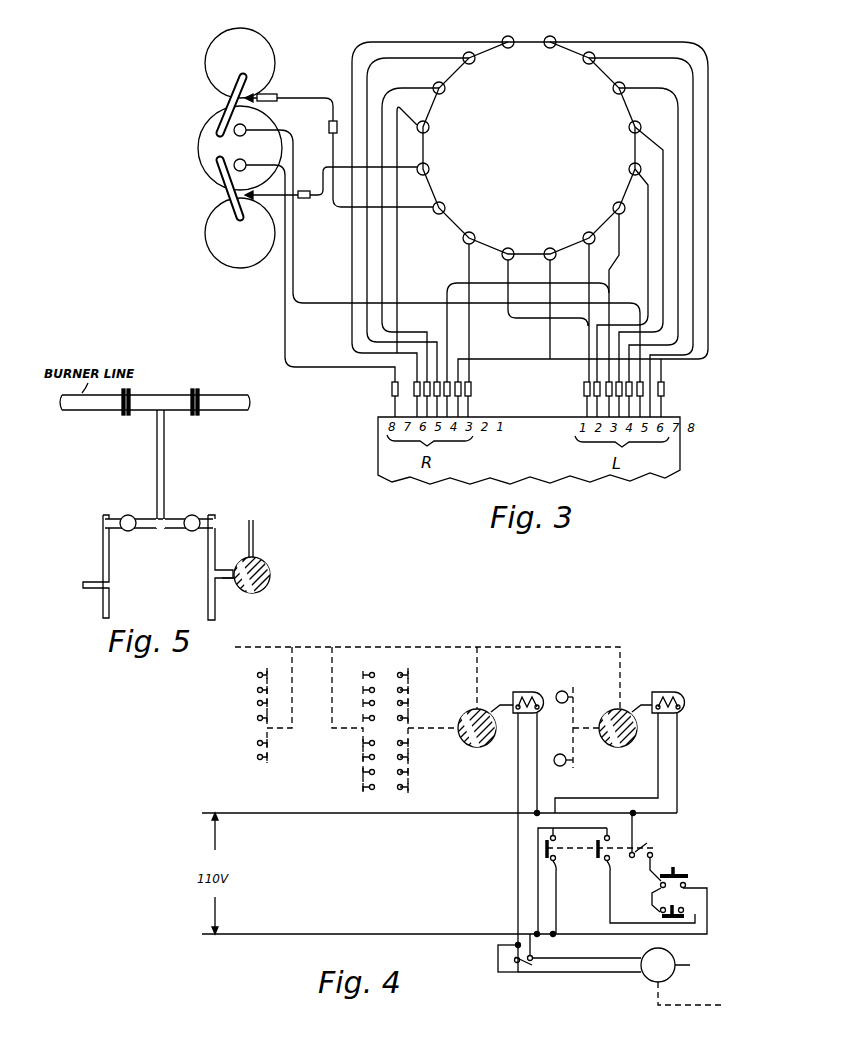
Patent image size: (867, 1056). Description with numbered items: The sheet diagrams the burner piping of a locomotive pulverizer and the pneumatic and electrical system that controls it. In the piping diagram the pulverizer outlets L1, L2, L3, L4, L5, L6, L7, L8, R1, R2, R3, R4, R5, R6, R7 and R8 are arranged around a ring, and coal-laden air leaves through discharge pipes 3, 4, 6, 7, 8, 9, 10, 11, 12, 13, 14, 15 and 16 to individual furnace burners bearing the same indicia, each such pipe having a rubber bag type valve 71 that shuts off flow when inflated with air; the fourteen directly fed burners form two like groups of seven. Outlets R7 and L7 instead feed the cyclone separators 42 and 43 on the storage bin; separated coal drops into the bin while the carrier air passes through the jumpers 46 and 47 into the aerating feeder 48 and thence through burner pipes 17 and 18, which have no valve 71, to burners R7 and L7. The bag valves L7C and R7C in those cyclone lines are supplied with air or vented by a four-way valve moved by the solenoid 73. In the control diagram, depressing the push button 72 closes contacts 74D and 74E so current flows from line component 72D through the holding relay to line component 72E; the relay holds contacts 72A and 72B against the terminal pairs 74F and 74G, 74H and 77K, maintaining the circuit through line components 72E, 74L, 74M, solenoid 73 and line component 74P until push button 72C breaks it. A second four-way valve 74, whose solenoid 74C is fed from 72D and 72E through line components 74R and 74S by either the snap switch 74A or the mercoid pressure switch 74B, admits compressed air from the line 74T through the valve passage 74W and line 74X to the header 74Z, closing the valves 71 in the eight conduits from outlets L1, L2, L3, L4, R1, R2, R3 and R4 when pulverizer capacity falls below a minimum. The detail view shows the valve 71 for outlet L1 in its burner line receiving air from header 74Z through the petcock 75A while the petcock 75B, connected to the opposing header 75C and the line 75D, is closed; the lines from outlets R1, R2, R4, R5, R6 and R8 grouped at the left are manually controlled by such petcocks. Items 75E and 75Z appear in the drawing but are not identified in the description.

In FIG. 3, the coal and air discharge pipe 3 is at (398, 265).
In FIG. 3, the coal and air discharge pipe 4 is at (351, 268).
In FIG. 3, the coal and air discharge pipe 6 is at (508, 362).
In FIG. 3, the coal and air discharge pipe 7 is at (413, 334).
In FIG. 3, the coal and air discharge pipe 8 is at (447, 336).
In FIG. 3, the coal and air discharge pipe 9 is at (468, 341).
In FIG. 3, the coal and air discharge pipe 10 is at (471, 372).
In FIG. 3, the coal and air discharge pipe 11 is at (657, 146).
In FIG. 3, the coal and air discharge pipe 12 is at (622, 42).
In FIG. 3, the coal and air discharge pipe 13 is at (552, 322).
In FIG. 3, the coal and air discharge pipe 14 is at (640, 333).
In FIG. 3, the coal and air discharge pipe 15 is at (609, 325).
In FIG. 3, the coal and air discharge pipe 16 is at (655, 59).
In FIG. 3, the burner pipe 17 is at (290, 138).
In FIG. 3, the burner pipe 18 is at (272, 163).
In FIG. 3, the cyclone type coal and air separator 42 is at (208, 232).
In FIG. 3, the cyclone type coal and air separator 43 is at (214, 52).
In FIG. 3, the jumper duct 46 is at (232, 99).
In FIG. 3, the jumper duct 47 is at (232, 196).
In FIG. 3, the aerating feeder 48 is at (199, 148).
In FIG. 3, the bag type valve 71 is at (583, 389).
In FIG. 5, the bag type valve 71 is at (177, 395).
In FIG. 4, the push button 72 is at (681, 855).
In FIG. 4, the holding contact 72A is at (597, 855).
In FIG. 4, the holding contact 72B is at (545, 845).
In FIG. 4, the push button 72C is at (684, 903).
In FIG. 4, the power line component 72D is at (301, 813).
In FIG. 4, the power line component 72E is at (288, 933).
In FIG. 4, the solenoid 73 is at (667, 692).
In FIG. 5, the solenoid operated four-way valve 74 is at (264, 563).
In FIG. 4, the solenoid operated four-way valve 74 is at (467, 748).
In FIG. 4, the snap switch 74A is at (517, 973).
In FIG. 4, the mercoid pressure switch 74B is at (620, 976).
In FIG. 4, the valve operating solenoid 74C is at (527, 691).
In FIG. 4, the contact 74D is at (676, 868).
In FIG. 4, the contact 74E is at (686, 884).
In FIG. 4, the terminal 74F is at (618, 831).
In FIG. 4, the terminal 74G is at (650, 890).
In FIG. 4, the terminal 74H is at (567, 895).
In FIG. 4, the line component 74L is at (553, 903).
In FIG. 4, the line component 74M is at (623, 798).
In FIG. 4, the line component 74P is at (678, 766).
In FIG. 4, the line component 74R is at (520, 778).
In FIG. 4, the line component 74S is at (537, 771).
In FIG. 5, the compressed air line 74T is at (254, 520).
In FIG. 4, the compressed air line 74T is at (503, 647).
In FIG. 4, the valve passage 74W is at (480, 711).
In FIG. 5, the air line 74X is at (222, 580).
In FIG. 4, the air line 74X is at (431, 731).
In FIG. 4, the header 74Z is at (411, 716).
In FIG. 5, the petcock 75A is at (193, 515).
In FIG. 4, the petcock 75A is at (364, 739).
In FIG. 5, the petcock 75B is at (128, 515).
In FIG. 5, the opposing header 75C is at (104, 553).
In FIG. 4, the line 75D is at (330, 719).
In FIG. 4, the contact group 75E is at (322, 731).
In FIG. 5, the pipe 75Z is at (208, 592).
In FIG. 4, the terminal 77K is at (572, 881).
In FIG. 3, the bag type valve L7C is at (318, 130).
In FIG. 4, the bag type valve L7C is at (565, 690).
In FIG. 3, the bag type valve R7C is at (311, 209).
In FIG. 4, the bag type valve R7C is at (551, 751).
In FIG. 3, the pulverizer outlet R1 is at (474, 235).
In FIG. 4, the pulverizer outlet R1 is at (322, 709).
In FIG. 3, the pulverizer outlet R2 is at (469, 64).
In FIG. 4, the pulverizer outlet R2 is at (322, 723).
In FIG. 3, the pulverizer outlet R3 is at (629, 169).
In FIG. 4, the pulverizer outlet R3 is at (363, 792).
In FIG. 3, the pulverizer outlet R4 is at (443, 94).
In FIG. 4, the pulverizer outlet R4 is at (322, 745).
In FIG. 3, the pulverizer outlet R5 is at (510, 248).
In FIG. 4, the pulverizer outlet R5 is at (251, 718).
In FIG. 3, the pulverizer outlet R6 is at (506, 48).
In FIG. 4, the pulverizer outlet R6 is at (251, 743).
In FIG. 3, the pulverizer outlet R7 is at (429, 169).
In FIG. 3, the pulverizer outlet R8 is at (429, 127).
In FIG. 4, the pulverizer outlet R8 is at (260, 763).
In FIG. 3, the pulverizer outlet L1 is at (589, 232).
In FIG. 4, the pulverizer outlet L1 is at (385, 675).
In FIG. 3, the pulverizer outlet L2 is at (585, 63).
In FIG. 4, the pulverizer outlet L2 is at (385, 690).
In FIG. 3, the pulverizer outlet L3 is at (614, 204).
In FIG. 4, the pulverizer outlet L3 is at (385, 703).
In FIG. 3, the pulverizer outlet L4 is at (614, 92).
In FIG. 4, the pulverizer outlet L4 is at (385, 718).
In FIG. 3, the pulverizer outlet L5 is at (553, 248).
In FIG. 3, the pulverizer outlet L6 is at (549, 48).
In FIG. 3, the pulverizer outlet L7 is at (445, 208).
In FIG. 3, the pulverizer outlet L8 is at (629, 127).